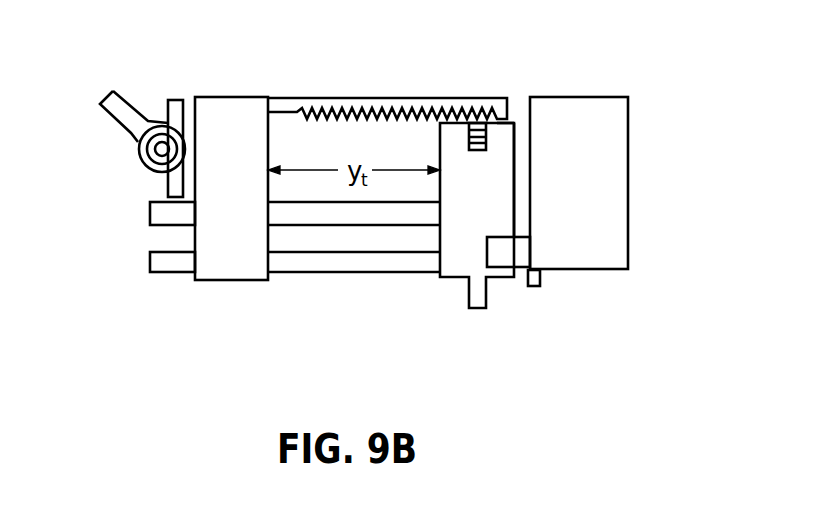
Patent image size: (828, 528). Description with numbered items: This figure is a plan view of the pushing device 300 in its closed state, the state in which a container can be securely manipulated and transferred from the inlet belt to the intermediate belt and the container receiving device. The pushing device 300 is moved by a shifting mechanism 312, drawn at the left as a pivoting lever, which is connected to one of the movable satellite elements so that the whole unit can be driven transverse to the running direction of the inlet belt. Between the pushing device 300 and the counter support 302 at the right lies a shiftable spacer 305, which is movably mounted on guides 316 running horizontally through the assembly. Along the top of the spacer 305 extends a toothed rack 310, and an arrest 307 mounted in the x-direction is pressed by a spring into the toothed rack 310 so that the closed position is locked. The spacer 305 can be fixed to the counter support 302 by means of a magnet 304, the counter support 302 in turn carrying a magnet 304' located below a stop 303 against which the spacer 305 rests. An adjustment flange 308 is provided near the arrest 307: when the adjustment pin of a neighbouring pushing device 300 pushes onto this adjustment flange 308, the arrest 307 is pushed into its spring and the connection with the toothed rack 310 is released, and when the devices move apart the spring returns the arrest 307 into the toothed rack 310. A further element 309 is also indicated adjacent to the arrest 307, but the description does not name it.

The pushing device 300 is at (220, 268).
The counter support 302 is at (603, 105).
The stop 303 is at (497, 250).
The magnet 304 is at (523, 311).
The magnet 304' is at (595, 249).
The shiftable spacer 305 is at (510, 187).
The arrest 307 is at (473, 122).
The adjustment flange 308 is at (518, 122).
The pawl 309 is at (486, 146).
The toothed rack 310 is at (348, 98).
The shifting mechanism 312 is at (128, 100).
The guides 316 is at (343, 212).